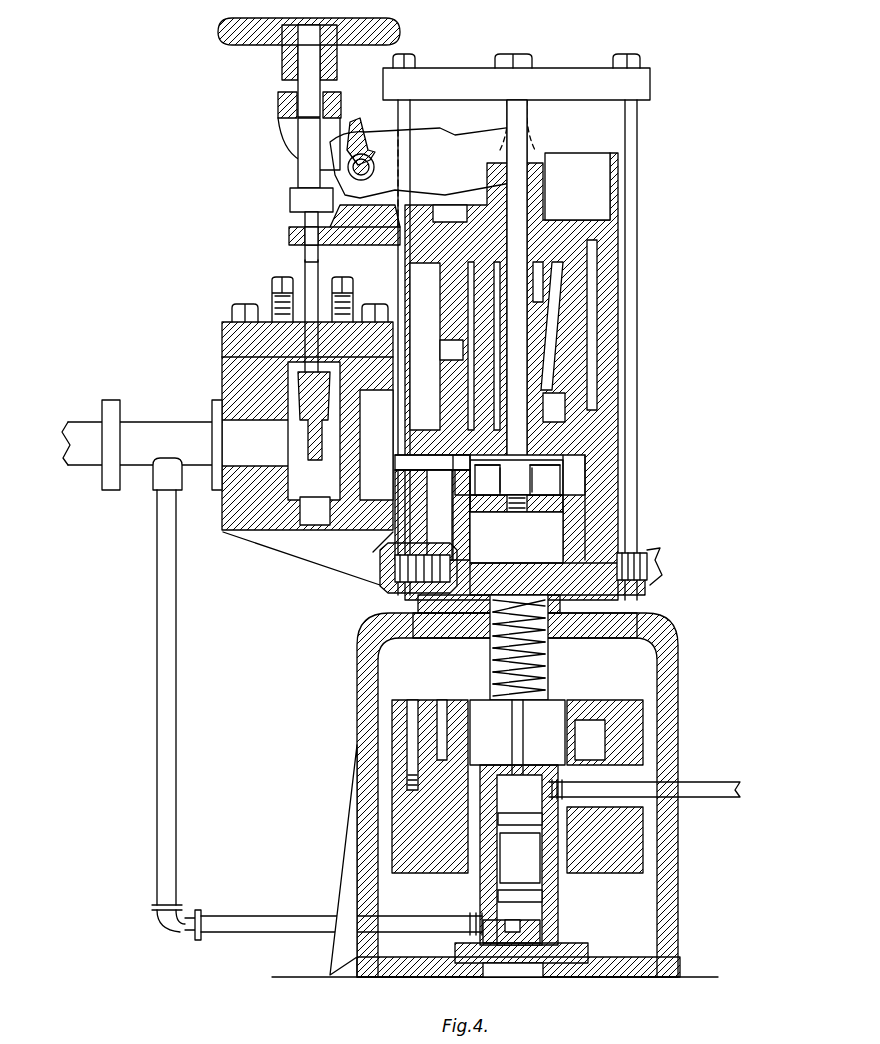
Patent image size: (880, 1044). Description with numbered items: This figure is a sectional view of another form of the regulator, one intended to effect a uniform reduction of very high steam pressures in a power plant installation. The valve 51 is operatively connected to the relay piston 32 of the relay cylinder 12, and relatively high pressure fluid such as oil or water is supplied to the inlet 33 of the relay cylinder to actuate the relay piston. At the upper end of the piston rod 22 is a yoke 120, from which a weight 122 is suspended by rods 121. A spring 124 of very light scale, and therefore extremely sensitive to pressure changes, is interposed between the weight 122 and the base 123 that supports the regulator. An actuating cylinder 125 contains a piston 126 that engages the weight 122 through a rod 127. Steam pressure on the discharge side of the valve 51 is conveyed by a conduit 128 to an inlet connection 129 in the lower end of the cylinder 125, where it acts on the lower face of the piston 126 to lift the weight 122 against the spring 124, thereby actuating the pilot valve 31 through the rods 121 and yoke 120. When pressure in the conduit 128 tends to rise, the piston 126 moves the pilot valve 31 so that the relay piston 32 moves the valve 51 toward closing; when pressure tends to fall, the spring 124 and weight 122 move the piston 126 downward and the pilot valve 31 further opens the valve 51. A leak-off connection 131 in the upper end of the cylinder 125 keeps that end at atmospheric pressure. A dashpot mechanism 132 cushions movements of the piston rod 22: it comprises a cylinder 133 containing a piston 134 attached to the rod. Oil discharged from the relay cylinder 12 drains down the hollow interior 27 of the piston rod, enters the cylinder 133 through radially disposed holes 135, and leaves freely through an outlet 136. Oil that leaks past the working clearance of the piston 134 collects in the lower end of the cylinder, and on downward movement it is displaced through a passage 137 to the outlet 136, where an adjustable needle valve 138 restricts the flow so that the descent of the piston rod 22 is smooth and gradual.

The relay cylinder 12 is at (555, 405).
The piston rod 22 is at (528, 112).
The hollow interior 27 is at (520, 367).
The pilot valve 31 is at (545, 290).
The relay piston 32 is at (555, 330).
The inlet 33 is at (440, 350).
The valve 51 is at (222, 372).
The yoke 120 is at (585, 58).
The rods 121 is at (640, 247).
The weight 122 is at (605, 865).
The base 123 is at (678, 720).
The spring 124 is at (548, 655).
The actuating cylinder 125 is at (560, 932).
The piston 126 is at (515, 856).
The rod 127 is at (510, 745).
The conduit 128 is at (177, 510).
The inlet connection 129 is at (480, 925).
The leak-off connection 131 is at (560, 800).
The dashpot mechanism 132 is at (575, 520).
The cylinder 133 is at (560, 548).
The piston 134 is at (548, 492).
The radially disposed holes 135 is at (522, 480).
The outlet 136 is at (420, 462).
The passage 137 is at (375, 552).
The adjustable needle valve 138 is at (372, 592).